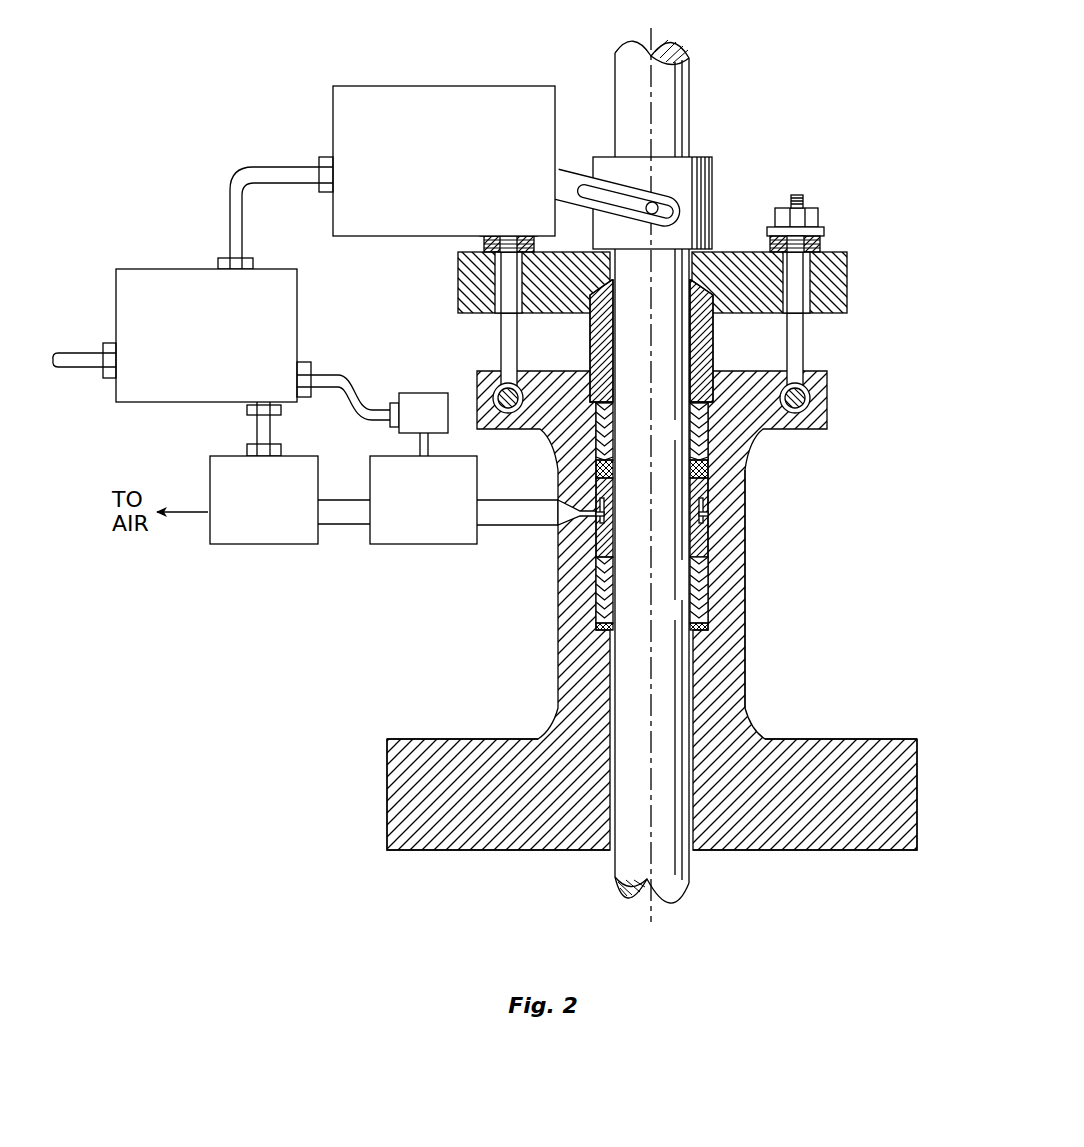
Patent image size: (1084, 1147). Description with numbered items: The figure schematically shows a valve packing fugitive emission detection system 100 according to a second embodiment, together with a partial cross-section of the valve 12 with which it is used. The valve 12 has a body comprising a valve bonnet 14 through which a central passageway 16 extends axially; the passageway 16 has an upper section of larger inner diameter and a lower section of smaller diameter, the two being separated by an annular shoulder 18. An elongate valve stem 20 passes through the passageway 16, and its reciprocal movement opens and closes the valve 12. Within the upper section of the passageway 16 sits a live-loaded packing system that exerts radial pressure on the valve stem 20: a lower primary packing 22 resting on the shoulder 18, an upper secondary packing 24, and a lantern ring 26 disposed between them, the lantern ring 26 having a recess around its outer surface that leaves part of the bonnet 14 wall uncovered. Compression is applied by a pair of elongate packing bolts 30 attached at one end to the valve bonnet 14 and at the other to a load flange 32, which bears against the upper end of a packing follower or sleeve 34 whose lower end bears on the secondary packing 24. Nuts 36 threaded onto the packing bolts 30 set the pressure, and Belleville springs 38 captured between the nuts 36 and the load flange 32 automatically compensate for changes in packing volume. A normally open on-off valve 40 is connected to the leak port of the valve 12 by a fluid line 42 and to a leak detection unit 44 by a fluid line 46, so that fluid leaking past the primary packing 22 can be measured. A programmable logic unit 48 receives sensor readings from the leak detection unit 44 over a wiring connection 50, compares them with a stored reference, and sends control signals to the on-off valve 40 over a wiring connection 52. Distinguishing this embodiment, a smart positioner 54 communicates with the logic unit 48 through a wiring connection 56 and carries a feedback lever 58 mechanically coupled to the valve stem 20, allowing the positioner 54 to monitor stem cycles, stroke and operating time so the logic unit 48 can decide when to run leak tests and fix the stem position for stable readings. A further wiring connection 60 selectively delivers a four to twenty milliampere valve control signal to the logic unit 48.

The valve 12 is at (690, 271).
The valve bonnet 14 is at (733, 548).
The central passageway 16 is at (583, 665).
The annular shoulder 18 is at (733, 612).
The valve stem 20 is at (690, 77).
The primary packing 22 is at (597, 597).
The secondary packing 24 is at (707, 447).
The lantern ring 26 is at (597, 543).
The packing bolts 30 is at (501, 333).
The load flange 32 is at (837, 296).
The packing follower or sleeve 34 is at (703, 285).
The nuts 36 is at (525, 214).
The Belleville springs 38 is at (483, 240).
The on-off valve 40 is at (420, 545).
The fluid line 42 is at (493, 526).
The leak detection unit 44 is at (231, 545).
The fluid line 46 is at (340, 525).
The programmable logic unit 48 is at (158, 269).
The wiring connection 50 is at (257, 425).
The wiring connection 52 is at (333, 375).
The smart positioner 54 is at (363, 86).
The wiring connection 56 is at (258, 167).
The feedback lever 58 is at (568, 175).
The wiring connection 60 is at (66, 352).
The valve packing fugitive emission detection system 100 is at (383, 330).